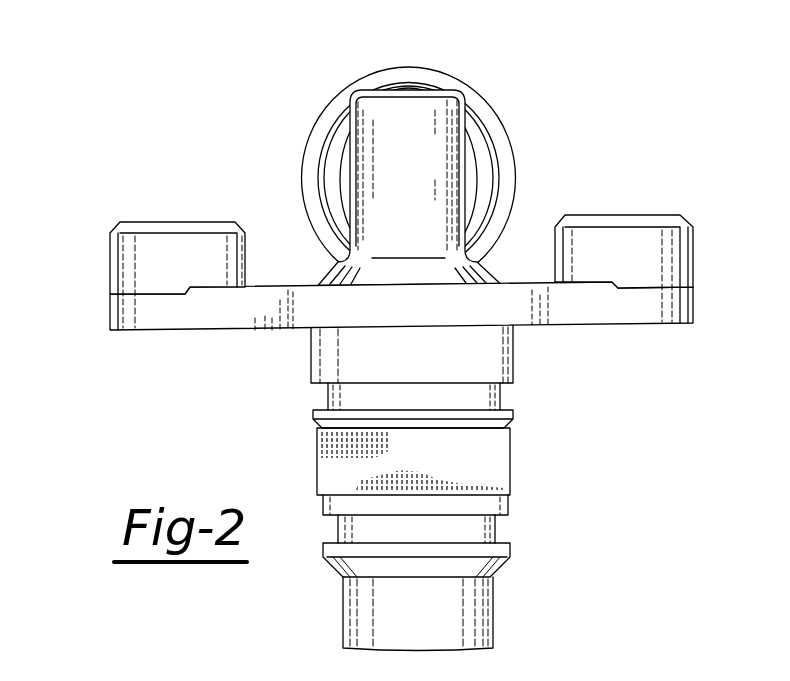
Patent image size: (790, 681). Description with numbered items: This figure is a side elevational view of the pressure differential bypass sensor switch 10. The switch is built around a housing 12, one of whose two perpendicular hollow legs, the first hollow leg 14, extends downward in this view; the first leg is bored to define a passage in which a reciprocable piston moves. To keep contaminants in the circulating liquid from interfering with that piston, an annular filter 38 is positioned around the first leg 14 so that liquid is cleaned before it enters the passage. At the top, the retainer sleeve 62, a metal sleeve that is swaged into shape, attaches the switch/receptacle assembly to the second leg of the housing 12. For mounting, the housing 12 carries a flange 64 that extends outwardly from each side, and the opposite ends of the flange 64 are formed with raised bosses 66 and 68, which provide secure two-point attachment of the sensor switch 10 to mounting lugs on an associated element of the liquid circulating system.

The pressure differential bypass sensor switch 10 is at (401, 338).
The housing 12 is at (498, 283).
The first hollow leg 14 is at (513, 368).
The annular filter 38 is at (510, 470).
The retainer sleeve 62 is at (470, 88).
The flange 64 is at (262, 286).
The raised boss 66 is at (693, 253).
The raised boss 68 is at (108, 252).